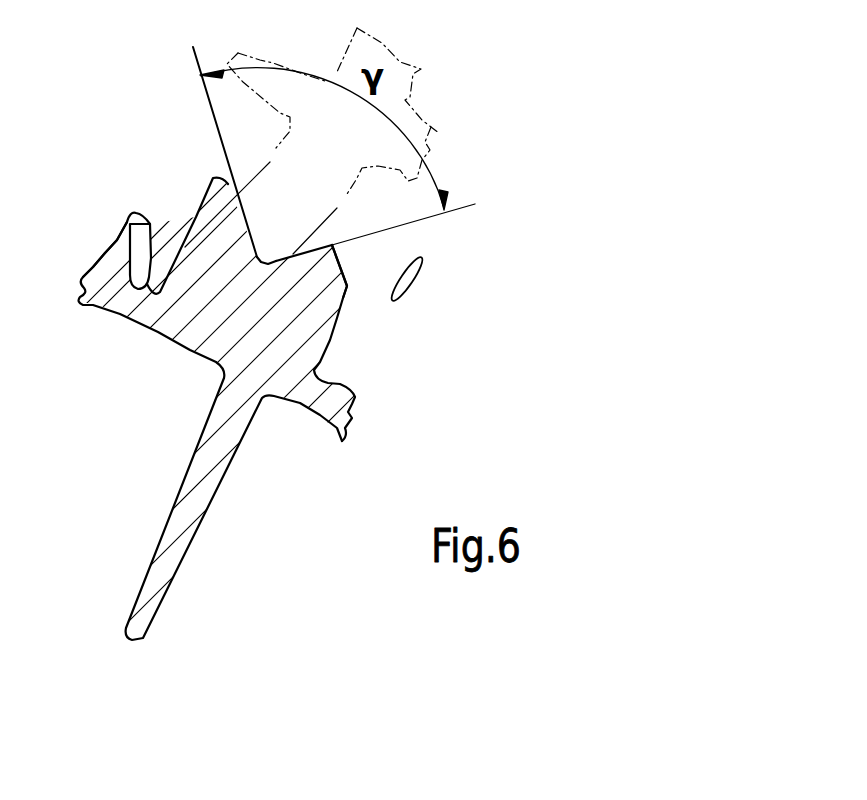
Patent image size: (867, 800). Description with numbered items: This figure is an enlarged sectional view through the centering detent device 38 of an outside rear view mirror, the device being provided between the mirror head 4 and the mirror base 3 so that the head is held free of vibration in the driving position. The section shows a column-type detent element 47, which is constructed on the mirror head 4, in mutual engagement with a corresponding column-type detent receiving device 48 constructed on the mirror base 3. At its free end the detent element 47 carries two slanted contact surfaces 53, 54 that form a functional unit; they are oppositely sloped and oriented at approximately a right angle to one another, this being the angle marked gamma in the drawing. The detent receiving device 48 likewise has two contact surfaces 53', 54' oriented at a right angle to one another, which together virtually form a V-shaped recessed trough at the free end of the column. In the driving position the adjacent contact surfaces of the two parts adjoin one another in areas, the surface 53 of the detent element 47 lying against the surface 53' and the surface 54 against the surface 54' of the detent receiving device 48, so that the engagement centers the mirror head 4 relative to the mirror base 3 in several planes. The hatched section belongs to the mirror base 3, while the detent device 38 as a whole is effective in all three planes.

The mirror base 3 is at (176, 326).
The mirror head 4 is at (436, 132).
The centering detent device 38 is at (384, 240).
The detent element 47 is at (278, 131).
The detent receiving device 48 is at (196, 218).
The contact surface 53 is at (279, 219).
The contact surface 53' is at (145, 245).
The contact surface 54 is at (331, 227).
The contact surface 54' is at (350, 314).